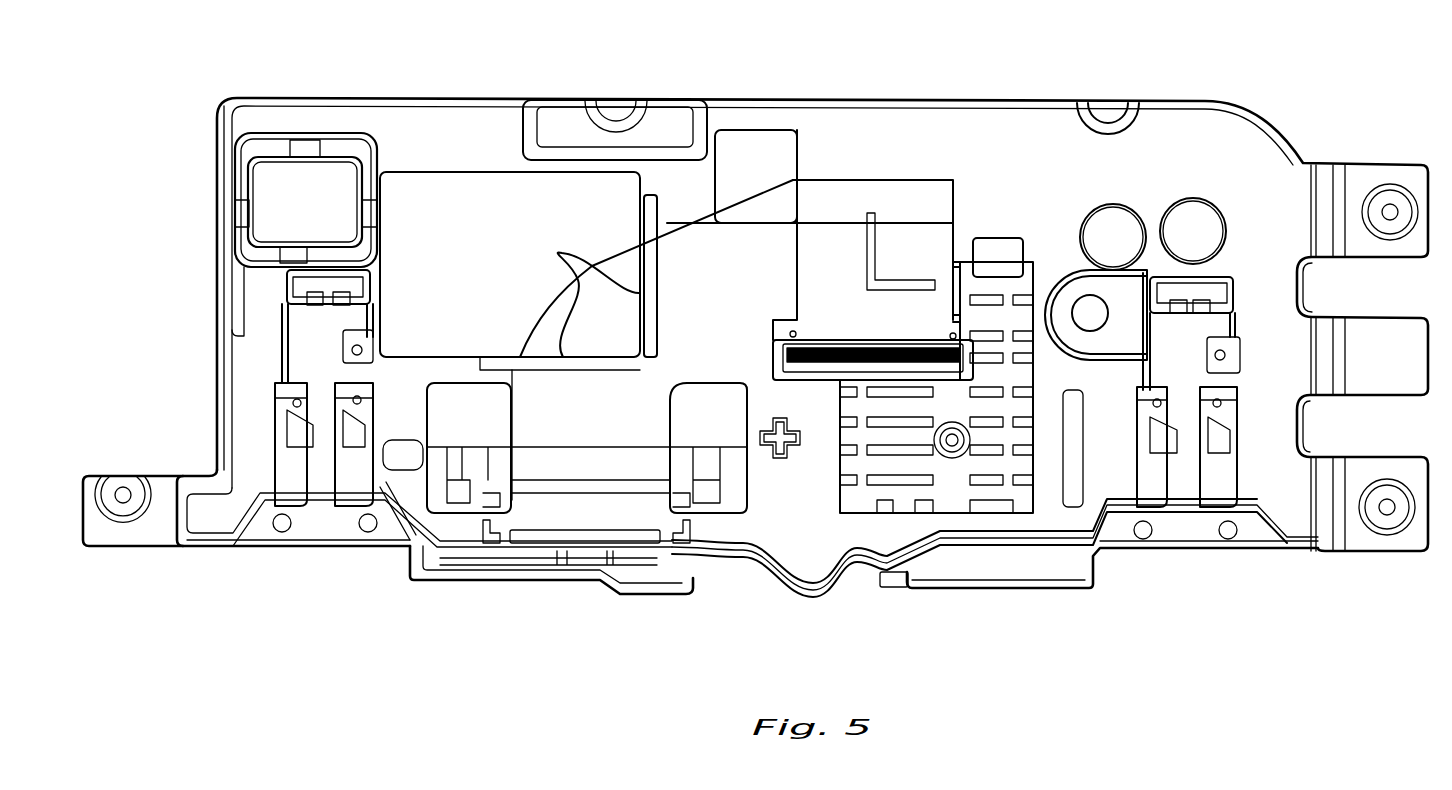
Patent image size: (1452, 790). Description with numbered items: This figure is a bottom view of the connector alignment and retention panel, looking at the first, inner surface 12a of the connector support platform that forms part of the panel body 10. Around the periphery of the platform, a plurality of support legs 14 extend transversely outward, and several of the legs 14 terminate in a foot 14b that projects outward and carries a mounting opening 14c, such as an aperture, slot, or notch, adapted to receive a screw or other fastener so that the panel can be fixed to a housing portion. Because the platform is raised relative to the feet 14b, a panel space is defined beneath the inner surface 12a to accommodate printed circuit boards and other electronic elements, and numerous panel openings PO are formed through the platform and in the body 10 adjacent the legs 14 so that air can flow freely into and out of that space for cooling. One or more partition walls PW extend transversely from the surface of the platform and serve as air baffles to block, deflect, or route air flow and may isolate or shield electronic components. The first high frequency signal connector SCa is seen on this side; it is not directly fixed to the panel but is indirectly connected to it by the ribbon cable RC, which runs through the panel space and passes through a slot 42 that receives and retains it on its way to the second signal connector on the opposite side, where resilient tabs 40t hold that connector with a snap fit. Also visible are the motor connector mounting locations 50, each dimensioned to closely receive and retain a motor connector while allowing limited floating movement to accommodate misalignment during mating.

The panel body 10 is at (935, 138).
The first (inner) surface 12a is at (1050, 171).
The support leg 14 is at (170, 527).
The foot 14b is at (98, 548).
The mounting opening 14c is at (123, 492).
The resilient tab 40t is at (477, 467).
The slot 42 is at (654, 273).
The motor connector mounting location 50 is at (318, 341).
The panel opening PO is at (742, 138).
The partition wall PW is at (562, 253).
The ribbon cable RC is at (748, 324).
The first high frequency signal connector SCa is at (866, 348).